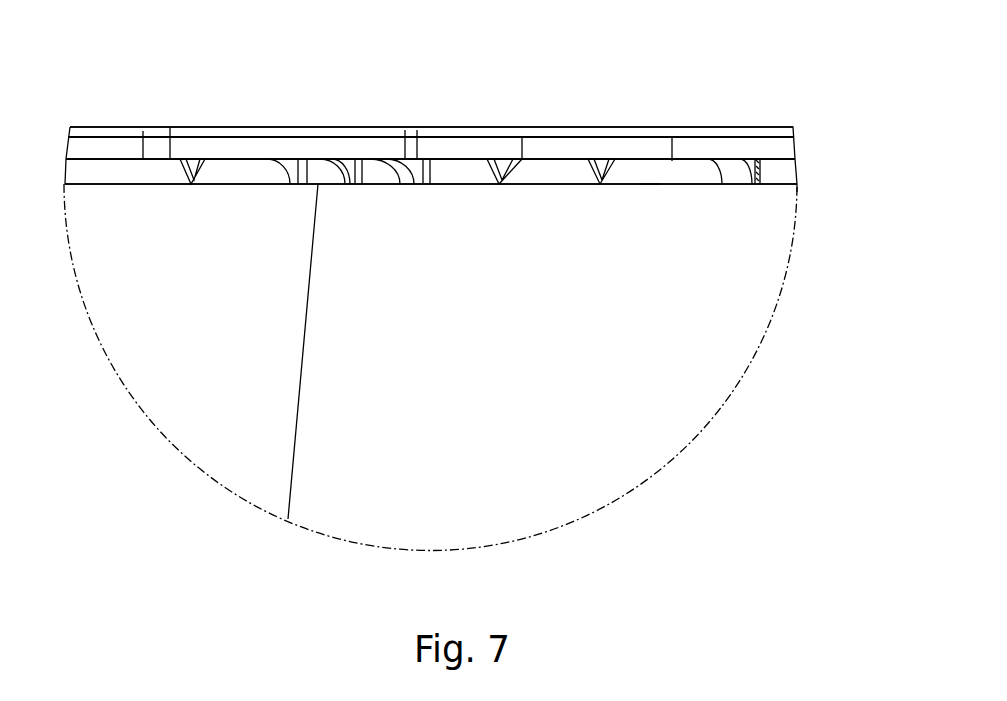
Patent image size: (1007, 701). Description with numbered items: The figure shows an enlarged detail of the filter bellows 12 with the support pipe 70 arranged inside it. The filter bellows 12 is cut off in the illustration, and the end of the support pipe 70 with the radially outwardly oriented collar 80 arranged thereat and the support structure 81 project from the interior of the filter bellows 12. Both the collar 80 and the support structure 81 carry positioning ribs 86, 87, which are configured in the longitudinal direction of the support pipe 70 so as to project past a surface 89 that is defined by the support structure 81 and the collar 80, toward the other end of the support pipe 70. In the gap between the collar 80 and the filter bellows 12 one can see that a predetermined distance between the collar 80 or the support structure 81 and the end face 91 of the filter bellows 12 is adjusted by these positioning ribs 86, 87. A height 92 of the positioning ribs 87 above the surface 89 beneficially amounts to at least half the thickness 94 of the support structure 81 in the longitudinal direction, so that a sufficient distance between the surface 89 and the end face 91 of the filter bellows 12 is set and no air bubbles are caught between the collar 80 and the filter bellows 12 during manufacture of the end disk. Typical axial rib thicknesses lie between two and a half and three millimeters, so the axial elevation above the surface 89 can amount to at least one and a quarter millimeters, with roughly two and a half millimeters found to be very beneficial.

The filter bellows 12 is at (755, 312).
The support pipe 70 is at (748, 123).
The collar 80 is at (548, 128).
The support structure 81 is at (275, 141).
The positioning rib 86 is at (190, 160).
The positioning rib 87 is at (615, 160).
The surface 89 is at (704, 163).
The end face 91 is at (648, 172).
The height 92 is at (800, 159).
The thickness 94 is at (800, 127).